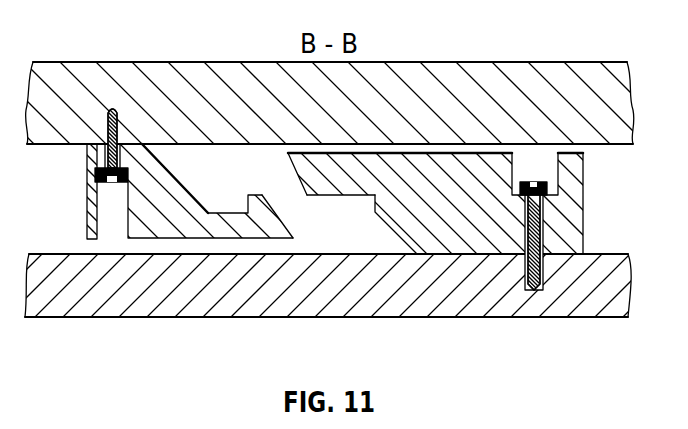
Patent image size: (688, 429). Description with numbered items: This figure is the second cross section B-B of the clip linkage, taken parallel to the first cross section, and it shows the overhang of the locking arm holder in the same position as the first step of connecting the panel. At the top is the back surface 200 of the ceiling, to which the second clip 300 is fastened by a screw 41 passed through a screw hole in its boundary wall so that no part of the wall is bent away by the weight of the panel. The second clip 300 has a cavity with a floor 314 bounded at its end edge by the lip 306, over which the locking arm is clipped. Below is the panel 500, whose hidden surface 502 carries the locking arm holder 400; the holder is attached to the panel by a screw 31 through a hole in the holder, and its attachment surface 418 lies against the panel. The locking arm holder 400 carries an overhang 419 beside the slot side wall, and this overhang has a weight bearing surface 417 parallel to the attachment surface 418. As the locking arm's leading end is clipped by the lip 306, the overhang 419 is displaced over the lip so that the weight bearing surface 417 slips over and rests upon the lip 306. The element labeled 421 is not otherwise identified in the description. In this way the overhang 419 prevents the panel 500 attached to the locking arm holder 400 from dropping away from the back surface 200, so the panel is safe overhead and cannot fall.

The back surface 200 is at (307, 115).
The panel 500 is at (307, 298).
The hidden surface 502 is at (82, 255).
The second clip 300 is at (90, 198).
The floor 314 is at (227, 213).
The protrusion 421 is at (256, 180).
The screw 41 is at (113, 108).
The lip 306 is at (300, 178).
The locking arm holder 400 is at (565, 230).
The overhang 419 is at (342, 180).
The weight bearing surface 417 is at (352, 197).
The attachment surface 418 is at (462, 255).
The screw 31 is at (540, 267).